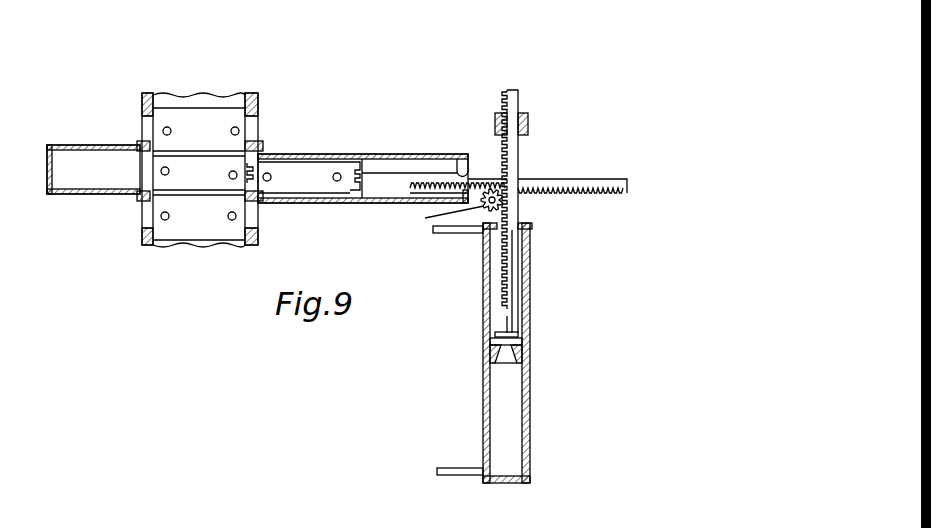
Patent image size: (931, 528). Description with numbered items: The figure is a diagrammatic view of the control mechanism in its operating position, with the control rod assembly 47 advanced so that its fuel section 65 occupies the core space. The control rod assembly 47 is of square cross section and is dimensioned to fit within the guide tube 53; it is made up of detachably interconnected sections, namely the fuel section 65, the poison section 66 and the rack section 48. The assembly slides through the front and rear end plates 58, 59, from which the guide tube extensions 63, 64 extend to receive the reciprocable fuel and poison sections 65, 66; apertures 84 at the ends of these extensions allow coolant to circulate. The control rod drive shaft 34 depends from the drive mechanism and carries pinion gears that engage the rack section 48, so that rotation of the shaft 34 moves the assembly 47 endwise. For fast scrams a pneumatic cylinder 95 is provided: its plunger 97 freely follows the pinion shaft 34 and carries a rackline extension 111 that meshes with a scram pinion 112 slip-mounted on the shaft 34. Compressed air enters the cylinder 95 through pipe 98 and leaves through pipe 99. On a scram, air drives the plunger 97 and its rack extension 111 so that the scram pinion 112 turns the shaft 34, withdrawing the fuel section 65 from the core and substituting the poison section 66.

The control rod drive shaft 34 is at (491, 188).
The control rod assembly 47 is at (603, 179).
The rack section 48 is at (585, 193).
The guide tube 53 is at (172, 196).
The front end plate 58 is at (261, 102).
The rear end plate 59 is at (141, 100).
The guide tube extension 63 is at (388, 157).
The guide tube extension 64 is at (72, 192).
The fuel section 65 is at (158, 165).
The poison section 66 is at (307, 188).
The aperture 84 is at (458, 177).
The pneumatic scram cylinder 95 is at (530, 280).
The cylinder plunger 97 is at (519, 345).
The pipe 98 is at (458, 468).
The pipe 99 is at (453, 233).
The rackline extension 111 is at (510, 238).
The scram pinion 112 is at (439, 216).